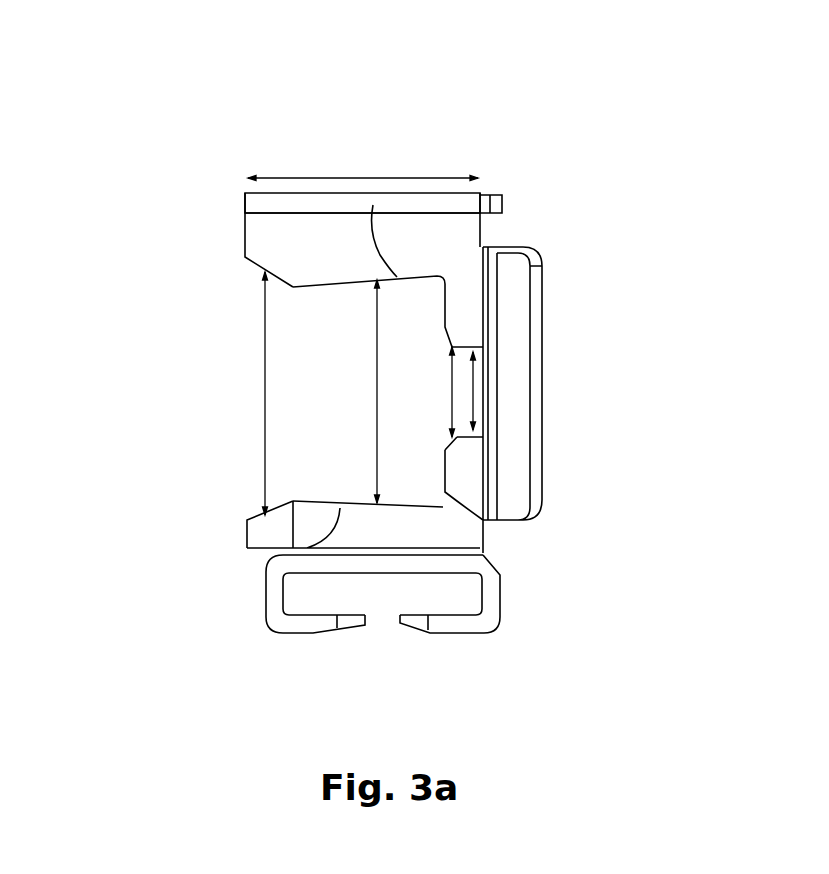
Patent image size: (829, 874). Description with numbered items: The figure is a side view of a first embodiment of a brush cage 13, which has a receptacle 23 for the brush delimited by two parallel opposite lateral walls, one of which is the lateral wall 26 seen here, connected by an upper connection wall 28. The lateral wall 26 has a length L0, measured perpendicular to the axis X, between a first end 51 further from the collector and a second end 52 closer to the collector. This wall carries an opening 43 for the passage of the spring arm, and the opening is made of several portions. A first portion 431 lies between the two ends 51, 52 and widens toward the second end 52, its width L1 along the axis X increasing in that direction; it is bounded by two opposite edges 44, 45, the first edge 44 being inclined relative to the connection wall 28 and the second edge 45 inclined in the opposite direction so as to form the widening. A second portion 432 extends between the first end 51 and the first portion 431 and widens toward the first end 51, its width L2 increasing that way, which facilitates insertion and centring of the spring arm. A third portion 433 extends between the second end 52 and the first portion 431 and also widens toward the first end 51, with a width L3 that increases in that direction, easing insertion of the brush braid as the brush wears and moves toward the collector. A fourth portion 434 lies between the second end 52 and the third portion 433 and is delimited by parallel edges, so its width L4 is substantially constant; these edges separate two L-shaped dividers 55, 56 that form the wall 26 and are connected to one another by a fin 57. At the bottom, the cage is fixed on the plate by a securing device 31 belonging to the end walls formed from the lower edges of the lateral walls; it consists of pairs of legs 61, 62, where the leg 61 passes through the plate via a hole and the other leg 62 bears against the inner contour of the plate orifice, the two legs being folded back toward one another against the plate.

The brush cage 13 is at (183, 137).
The divider 55 is at (323, 242).
The length of the lateral wall L0 is at (343, 178).
The first edge 44 is at (373, 205).
The upper connection wall 28 is at (441, 203).
The receptacle 23 is at (456, 230).
The first end 51 is at (245, 203).
The second end 52 is at (484, 216).
The lateral wall 26 is at (267, 243).
The third portion 433 is at (447, 330).
The opening 43 is at (232, 300).
The fourth portion 434 is at (483, 373).
The width of the second portion L2 is at (265, 393).
The width of the first portion L1 is at (377, 403).
The width of the third portion L3 is at (452, 395).
The width of the fourth portion L4 is at (483, 397).
The fin 57 is at (523, 462).
The second portion 432 is at (255, 520).
The second edge 45 is at (297, 552).
The first portion 431 is at (417, 493).
The leg 61 is at (297, 627).
The divider 56 is at (382, 530).
The securing device 31 is at (440, 638).
The leg 62 is at (470, 623).